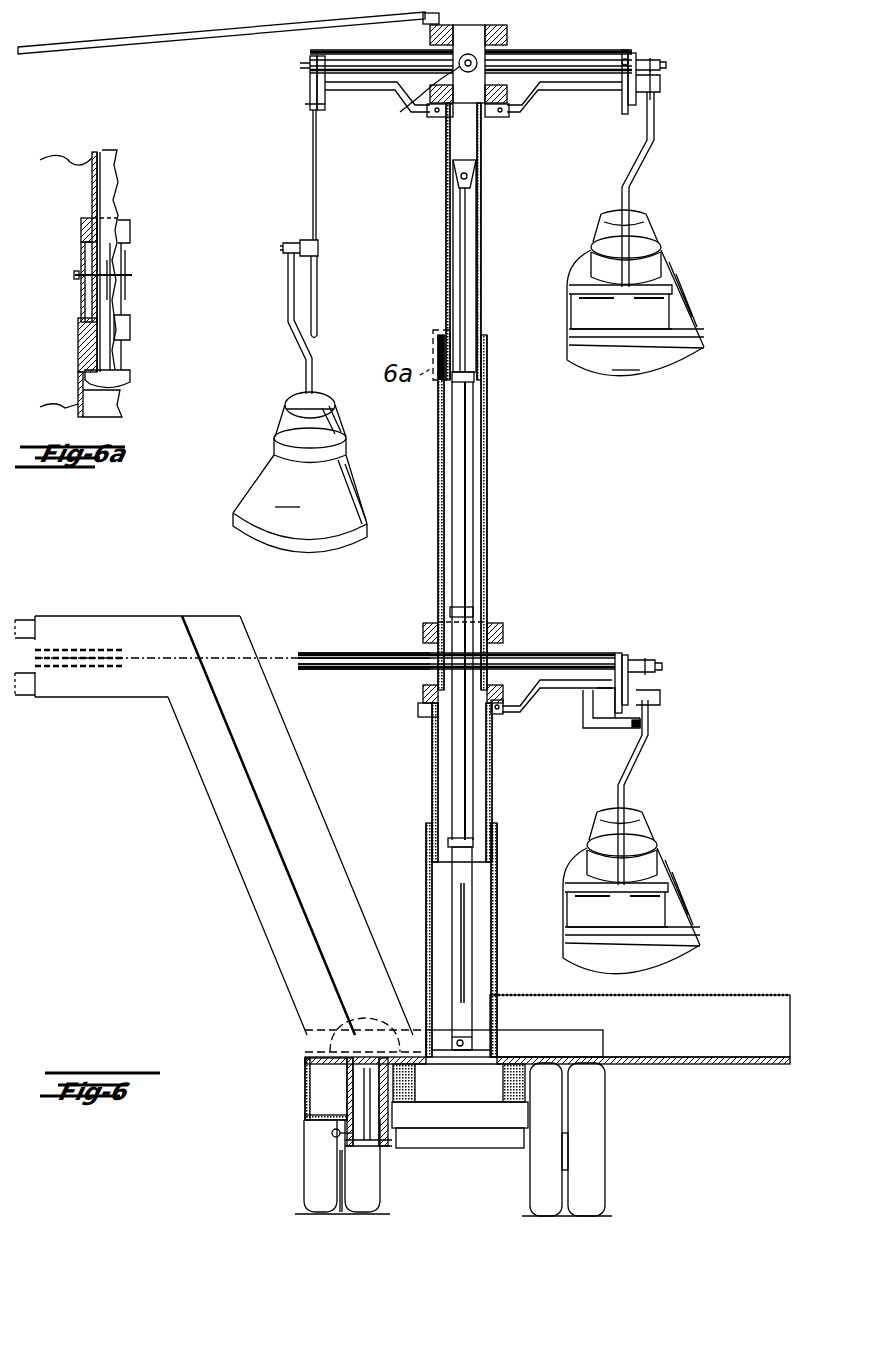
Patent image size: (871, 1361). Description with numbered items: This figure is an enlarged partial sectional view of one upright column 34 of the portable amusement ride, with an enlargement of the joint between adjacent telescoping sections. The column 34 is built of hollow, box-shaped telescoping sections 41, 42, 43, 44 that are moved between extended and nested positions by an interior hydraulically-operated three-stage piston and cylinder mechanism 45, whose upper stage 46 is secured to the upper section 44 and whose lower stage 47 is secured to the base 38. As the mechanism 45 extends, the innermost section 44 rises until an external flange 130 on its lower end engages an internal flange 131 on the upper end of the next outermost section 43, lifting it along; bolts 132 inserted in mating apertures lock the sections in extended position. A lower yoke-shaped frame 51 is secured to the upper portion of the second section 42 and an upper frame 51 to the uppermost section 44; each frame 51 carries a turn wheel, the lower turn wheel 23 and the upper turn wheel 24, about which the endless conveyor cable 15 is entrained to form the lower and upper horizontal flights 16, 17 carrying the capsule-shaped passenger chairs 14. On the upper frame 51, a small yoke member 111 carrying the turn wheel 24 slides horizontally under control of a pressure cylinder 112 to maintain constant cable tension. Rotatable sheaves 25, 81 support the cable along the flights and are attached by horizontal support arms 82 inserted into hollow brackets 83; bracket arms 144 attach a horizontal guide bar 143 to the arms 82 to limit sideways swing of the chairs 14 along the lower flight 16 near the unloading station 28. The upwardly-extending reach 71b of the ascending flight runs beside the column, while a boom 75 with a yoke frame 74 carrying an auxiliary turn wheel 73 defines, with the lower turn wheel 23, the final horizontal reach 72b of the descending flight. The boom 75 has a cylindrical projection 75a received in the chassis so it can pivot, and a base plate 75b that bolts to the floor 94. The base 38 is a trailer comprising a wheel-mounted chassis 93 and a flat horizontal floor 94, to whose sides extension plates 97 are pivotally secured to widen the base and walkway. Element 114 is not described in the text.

In FIG. 6, the top boom bar 114 is at (184, 36).
In FIG. 6, the yoke-shaped frame 51 is at (507, 30).
In FIG. 6, the small yoke member 111 is at (486, 66).
In FIG. 6, the turn wheel 24 is at (586, 50).
In FIG. 6, the cable portion 17 is at (632, 62).
In FIG. 6, the rotatable sheave 81 is at (310, 100).
In FIG. 6, the support arm 82 is at (360, 92).
In FIG. 6, the hydraulically-operated pressure cylinder 112 is at (411, 96).
In FIG. 6, the rotatable sheave 25 is at (640, 99).
In FIG. 6, the hollow bracket 83 is at (499, 117).
In FIG. 6, the upwardly-extending reach 71b is at (318, 167).
In FIG. 6, the endless conveyor cable 15 is at (312, 193).
In FIG. 6, the upper stage 46 is at (473, 200).
In FIG. 6A, the upper telescoping section 44 is at (69, 261).
In FIG. 6, the upper telescoping section 44 is at (481, 260).
In FIG. 6, the passenger chair 14 is at (675, 900).
In FIG. 6, the column 34 is at (488, 464).
In FIG. 6A, the telescoping section 43 is at (68, 396).
In FIG. 6, the telescoping section 43 is at (488, 526).
In FIG. 6, the yoke frame 74 is at (24, 616).
In FIG. 6, the auxiliary turn wheel 73 is at (64, 650).
In FIG. 6, the final horizontal reach 72b is at (276, 652).
In FIG. 6, the boom 75 is at (222, 827).
In FIG. 6, the turn wheel 23 is at (578, 650).
In FIG. 6, the cable portion 16 is at (628, 660).
In FIG. 6, the bracket arm 144 is at (608, 730).
In FIG. 6, the horizontal guide bar 143 is at (642, 724).
In FIG. 6, the second telescoping section 42 is at (492, 767).
In FIG. 6, the telescoping section 41 is at (497, 925).
In FIG. 6, the three-stage piston and cylinder mechanism 45 is at (467, 888).
In FIG. 6, the lower stage 47 is at (455, 940).
In FIG. 6, the unloading station 28 is at (718, 996).
In FIG. 6, the extension plate 97 is at (738, 1055).
In FIG. 6, the floor 94 is at (528, 1057).
In FIG. 6, the base 38 is at (290, 1010).
In FIG. 6, the base plate 75b is at (368, 1030).
In FIG. 6, the cylindrical projection 75a is at (390, 1167).
In FIG. 6, the wheel-mounted chassis 93 is at (492, 1082).
In FIG. 6A, the bolt 132 is at (74, 279).
In FIG. 6A, the internal flange 131 is at (130, 326).
In FIG. 6A, the external flange 130 is at (130, 382).